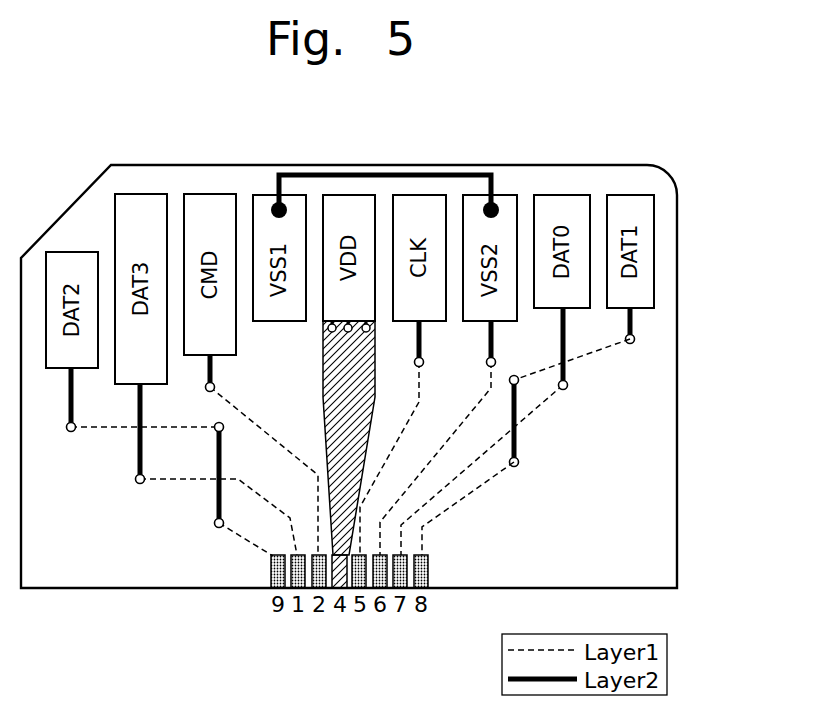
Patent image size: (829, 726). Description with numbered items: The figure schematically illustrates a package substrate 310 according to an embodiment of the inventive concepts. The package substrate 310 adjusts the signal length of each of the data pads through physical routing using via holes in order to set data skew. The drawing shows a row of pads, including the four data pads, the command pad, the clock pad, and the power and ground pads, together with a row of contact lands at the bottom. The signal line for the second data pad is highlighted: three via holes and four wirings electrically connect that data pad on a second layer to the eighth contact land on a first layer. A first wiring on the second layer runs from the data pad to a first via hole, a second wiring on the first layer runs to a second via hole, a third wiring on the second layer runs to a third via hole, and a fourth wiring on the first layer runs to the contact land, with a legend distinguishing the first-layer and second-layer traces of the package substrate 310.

The package substrate 310 is at (658, 121).